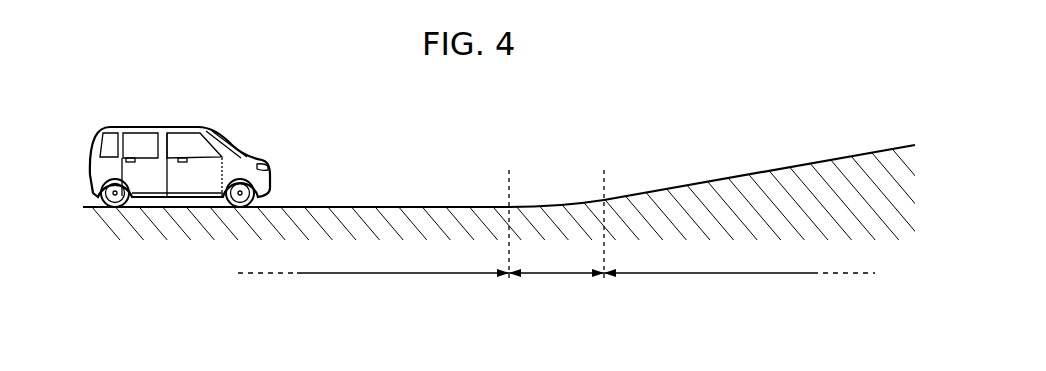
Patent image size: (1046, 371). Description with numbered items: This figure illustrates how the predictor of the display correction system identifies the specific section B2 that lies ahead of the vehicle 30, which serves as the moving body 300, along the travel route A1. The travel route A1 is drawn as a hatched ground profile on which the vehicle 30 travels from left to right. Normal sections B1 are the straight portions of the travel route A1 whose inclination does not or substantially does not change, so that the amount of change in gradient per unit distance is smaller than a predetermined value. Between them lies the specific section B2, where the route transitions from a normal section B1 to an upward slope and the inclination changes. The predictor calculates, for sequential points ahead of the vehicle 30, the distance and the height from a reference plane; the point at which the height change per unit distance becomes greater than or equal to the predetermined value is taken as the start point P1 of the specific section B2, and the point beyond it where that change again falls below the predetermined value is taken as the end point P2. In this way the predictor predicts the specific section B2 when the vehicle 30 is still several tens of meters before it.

The vehicle 30 is at (192, 139).
The moving body 300 is at (186, 127).
The travel route A1 is at (180, 217).
The start point P1 is at (508, 212).
The end point P2 is at (603, 212).
The normal section B1 is at (556, 287).
The specific section B2 is at (556, 287).